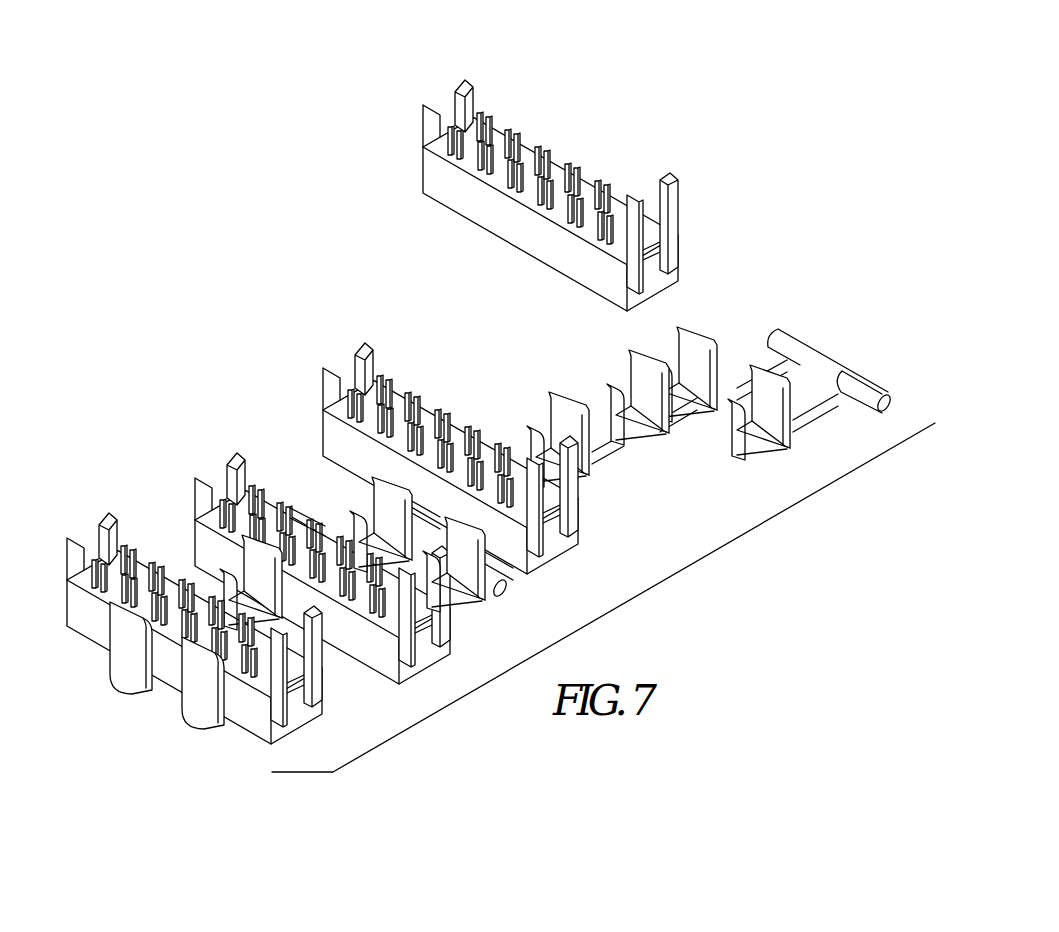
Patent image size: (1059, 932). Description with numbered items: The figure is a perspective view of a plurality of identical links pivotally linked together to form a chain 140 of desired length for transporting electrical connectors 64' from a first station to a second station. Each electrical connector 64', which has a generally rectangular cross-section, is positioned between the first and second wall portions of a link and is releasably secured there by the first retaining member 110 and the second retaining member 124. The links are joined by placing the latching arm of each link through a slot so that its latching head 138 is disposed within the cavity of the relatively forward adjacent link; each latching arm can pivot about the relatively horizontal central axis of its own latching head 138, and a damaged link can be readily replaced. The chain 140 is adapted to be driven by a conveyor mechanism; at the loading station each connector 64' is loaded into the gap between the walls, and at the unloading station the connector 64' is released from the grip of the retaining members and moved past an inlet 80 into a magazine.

The electrical connector 64' is at (436, 382).
The inlet 80 is at (777, 461).
The first retaining member 110 is at (308, 515).
The second retaining member 124 is at (235, 550).
The latching head 138 is at (505, 592).
The chain 140 is at (650, 595).